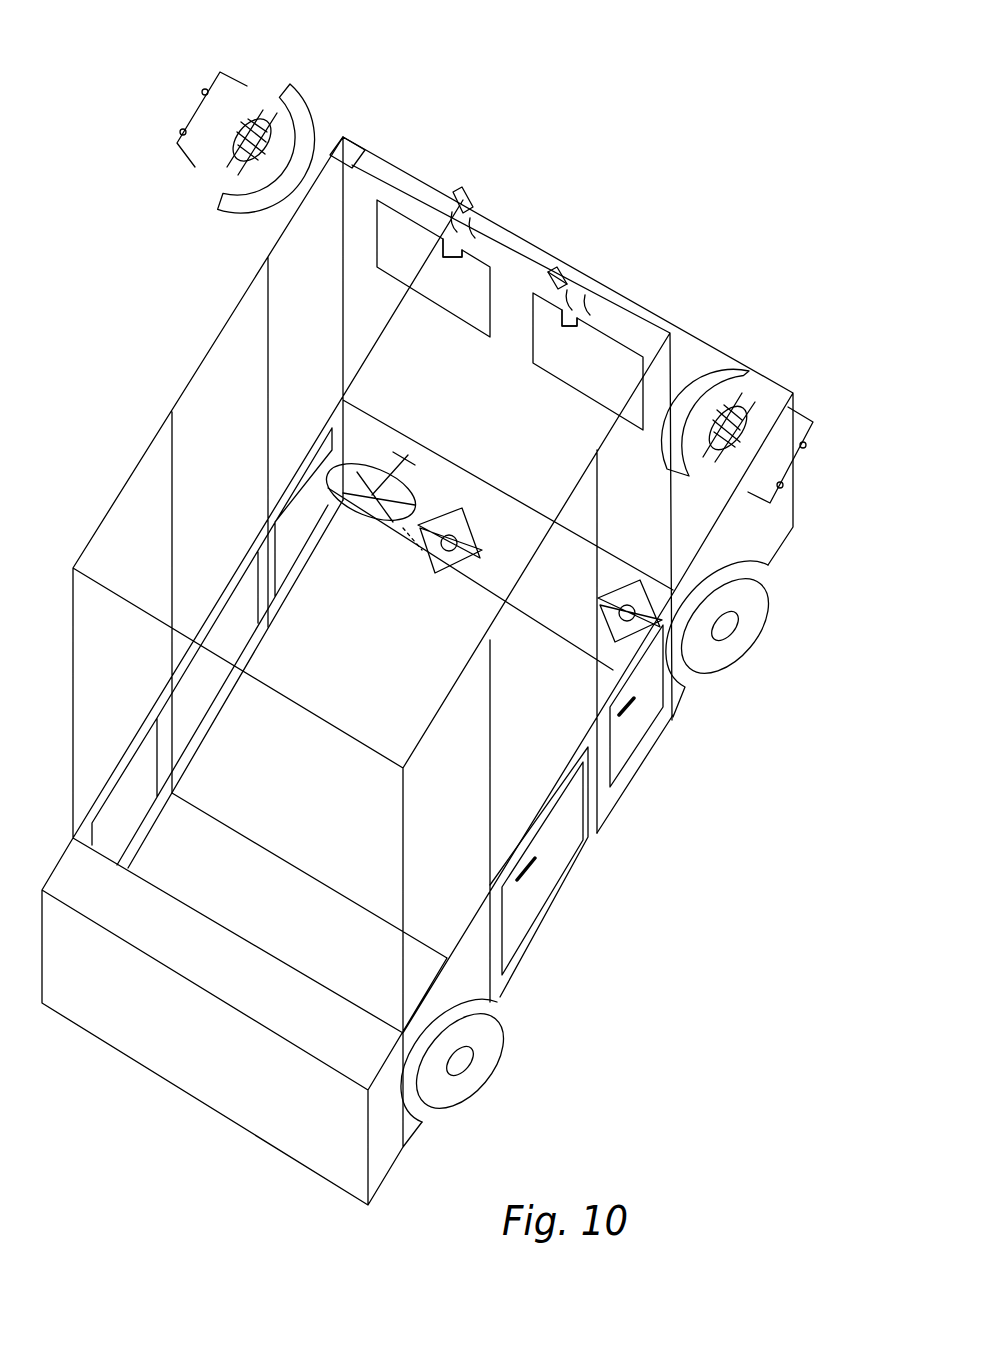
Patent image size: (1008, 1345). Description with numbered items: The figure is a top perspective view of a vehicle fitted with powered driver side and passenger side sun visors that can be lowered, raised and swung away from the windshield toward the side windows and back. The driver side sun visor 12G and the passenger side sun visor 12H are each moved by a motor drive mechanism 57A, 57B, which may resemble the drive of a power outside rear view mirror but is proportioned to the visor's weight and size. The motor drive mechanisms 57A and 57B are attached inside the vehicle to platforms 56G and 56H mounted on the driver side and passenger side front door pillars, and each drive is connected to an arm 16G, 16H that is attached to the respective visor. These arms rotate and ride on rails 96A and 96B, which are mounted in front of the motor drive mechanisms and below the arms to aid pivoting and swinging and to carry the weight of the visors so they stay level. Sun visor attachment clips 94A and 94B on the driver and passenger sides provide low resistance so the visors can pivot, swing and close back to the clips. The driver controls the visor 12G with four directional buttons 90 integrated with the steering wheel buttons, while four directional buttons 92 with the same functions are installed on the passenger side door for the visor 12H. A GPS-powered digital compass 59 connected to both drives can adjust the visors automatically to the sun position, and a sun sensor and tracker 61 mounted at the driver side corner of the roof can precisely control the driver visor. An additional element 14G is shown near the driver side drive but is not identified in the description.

The driver side sun visor 12G is at (473, 320).
The passenger side sun visor 12H is at (552, 372).
The sensor bracket arm 14G is at (230, 135).
The arm 16G is at (487, 257).
The arm 16H is at (605, 303).
The platform 56G is at (172, 143).
The platform 56H is at (806, 452).
The motor drive mechanism 57A is at (253, 118).
The motor drive mechanism 57B is at (722, 458).
The GPS-powered digital compass 59 is at (560, 275).
The sun sensor and tracker 61 is at (350, 150).
The four directional buttons 90 is at (478, 537).
The four directional buttons 92 is at (598, 600).
The attachment clip 94A is at (470, 200).
The attachment clip 94B is at (590, 288).
The rail 96A is at (220, 198).
The rail 96B is at (748, 368).